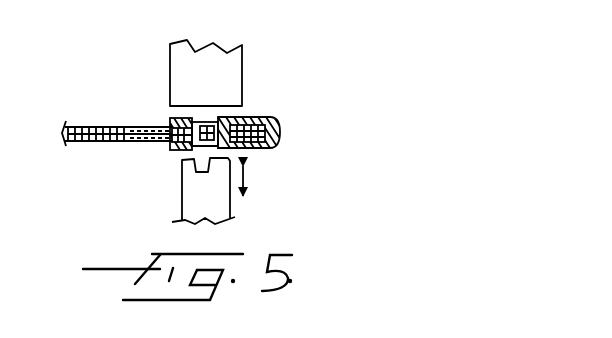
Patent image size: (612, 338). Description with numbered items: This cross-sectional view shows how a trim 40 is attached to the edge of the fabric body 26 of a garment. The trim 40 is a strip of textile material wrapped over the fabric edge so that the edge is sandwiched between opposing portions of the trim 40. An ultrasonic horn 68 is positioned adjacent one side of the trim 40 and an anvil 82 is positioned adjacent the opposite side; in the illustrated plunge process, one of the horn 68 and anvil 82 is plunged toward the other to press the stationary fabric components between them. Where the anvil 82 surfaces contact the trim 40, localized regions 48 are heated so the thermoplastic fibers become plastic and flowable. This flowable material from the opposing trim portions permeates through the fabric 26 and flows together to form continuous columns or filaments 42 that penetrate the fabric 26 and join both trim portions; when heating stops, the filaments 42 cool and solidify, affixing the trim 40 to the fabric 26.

The fabric body 26 is at (100, 142).
The trim 40 is at (275, 117).
The filaments 42 is at (170, 128).
The localized regions 48 is at (195, 150).
The ultrasonic horn 68 is at (178, 62).
The anvil 82 is at (183, 198).